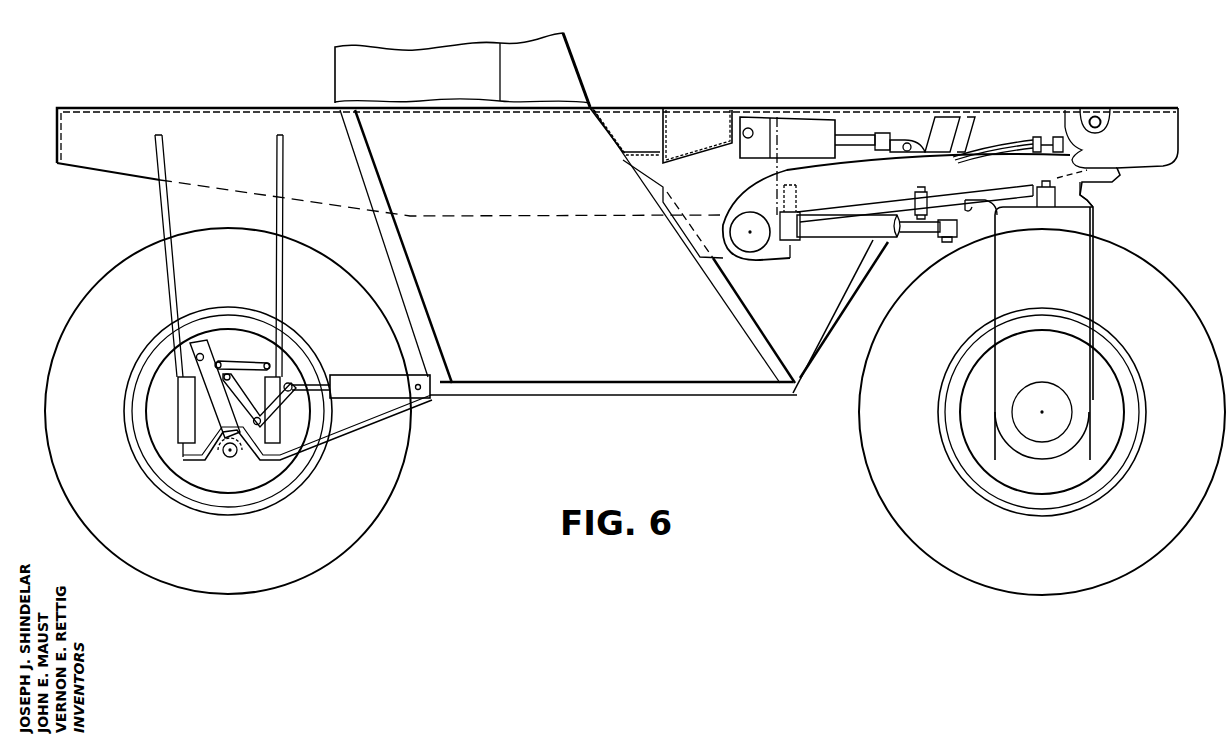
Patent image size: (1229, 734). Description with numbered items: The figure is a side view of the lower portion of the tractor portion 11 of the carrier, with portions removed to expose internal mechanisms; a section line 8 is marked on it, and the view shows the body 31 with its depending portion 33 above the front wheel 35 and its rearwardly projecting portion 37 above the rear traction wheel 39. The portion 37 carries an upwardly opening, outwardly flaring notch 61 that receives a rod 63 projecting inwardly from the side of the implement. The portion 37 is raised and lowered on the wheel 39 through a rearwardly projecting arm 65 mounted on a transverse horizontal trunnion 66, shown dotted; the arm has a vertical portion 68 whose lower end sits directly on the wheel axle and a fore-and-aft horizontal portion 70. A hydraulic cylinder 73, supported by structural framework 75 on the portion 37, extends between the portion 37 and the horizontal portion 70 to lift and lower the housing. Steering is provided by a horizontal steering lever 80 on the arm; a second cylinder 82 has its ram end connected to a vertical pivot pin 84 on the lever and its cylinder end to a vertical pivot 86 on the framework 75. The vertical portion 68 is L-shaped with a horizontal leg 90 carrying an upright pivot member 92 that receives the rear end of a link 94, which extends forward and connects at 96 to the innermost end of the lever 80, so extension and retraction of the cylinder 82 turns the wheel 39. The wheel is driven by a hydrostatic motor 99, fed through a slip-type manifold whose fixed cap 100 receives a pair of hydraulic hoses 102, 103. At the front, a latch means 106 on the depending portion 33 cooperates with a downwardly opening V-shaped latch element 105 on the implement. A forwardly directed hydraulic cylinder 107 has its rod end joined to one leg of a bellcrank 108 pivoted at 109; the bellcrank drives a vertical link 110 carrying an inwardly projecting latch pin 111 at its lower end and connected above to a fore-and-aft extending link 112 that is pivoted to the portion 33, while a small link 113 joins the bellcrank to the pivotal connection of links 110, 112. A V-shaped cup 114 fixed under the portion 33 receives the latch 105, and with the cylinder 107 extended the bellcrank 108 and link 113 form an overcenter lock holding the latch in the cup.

The section line 8 is at (738, 168).
The tractor portion 11 is at (582, 55).
The vehicle body 31 is at (107, 122).
The depending portion 33 is at (190, 254).
The front wheel 35 is at (304, 560).
The rearwardly projecting portion 37 is at (1175, 128).
The rear traction wheel 39 is at (1143, 270).
The notch 61 is at (1101, 119).
The rod 63 is at (1101, 125).
The rearwardly projecting arm 65 is at (840, 178).
The trunnion 66 is at (757, 240).
The vertical portion 68 is at (1068, 253).
The horizontal portion 70 is at (950, 150).
The hydraulic cylinder 73 is at (805, 130).
The structural framework 75 is at (680, 138).
The steering lever 80 is at (983, 212).
The second cylinder 82 is at (818, 235).
The vertical pivot pin 84 is at (948, 240).
The vertical pivot 86 is at (783, 202).
The horizontal leg 90 is at (1078, 192).
The upright pivot member 92 is at (1046, 196).
The link 94 is at (966, 193).
The connection 96 is at (913, 197).
The hydrostatic motor 99 is at (1100, 462).
The cap 100 is at (1078, 151).
The hydraulic hose 102 is at (1006, 138).
The hydraulic hose 103 is at (1048, 135).
The V-shaped latch element 105 is at (240, 447).
The latch means 106 is at (340, 372).
The hydraulic cylinder 107 is at (360, 383).
The bellcrank 108 is at (290, 382).
The pivot 109 is at (283, 418).
The vertical link 110 is at (212, 400).
The latch pin 111 is at (226, 457).
The fore-and-aft extending link 112 is at (233, 357).
The small link 113 is at (224, 352).
The V-shaped cup 114 is at (236, 458).